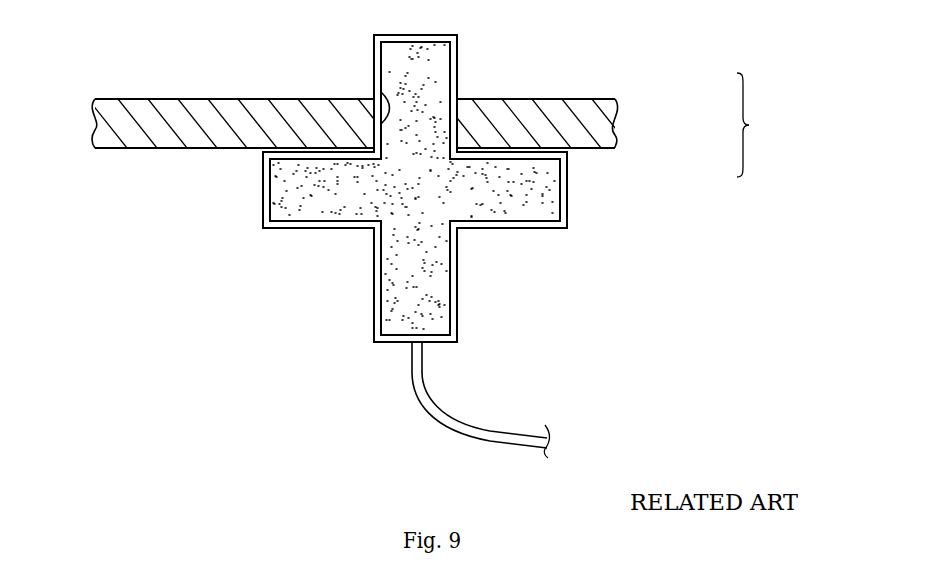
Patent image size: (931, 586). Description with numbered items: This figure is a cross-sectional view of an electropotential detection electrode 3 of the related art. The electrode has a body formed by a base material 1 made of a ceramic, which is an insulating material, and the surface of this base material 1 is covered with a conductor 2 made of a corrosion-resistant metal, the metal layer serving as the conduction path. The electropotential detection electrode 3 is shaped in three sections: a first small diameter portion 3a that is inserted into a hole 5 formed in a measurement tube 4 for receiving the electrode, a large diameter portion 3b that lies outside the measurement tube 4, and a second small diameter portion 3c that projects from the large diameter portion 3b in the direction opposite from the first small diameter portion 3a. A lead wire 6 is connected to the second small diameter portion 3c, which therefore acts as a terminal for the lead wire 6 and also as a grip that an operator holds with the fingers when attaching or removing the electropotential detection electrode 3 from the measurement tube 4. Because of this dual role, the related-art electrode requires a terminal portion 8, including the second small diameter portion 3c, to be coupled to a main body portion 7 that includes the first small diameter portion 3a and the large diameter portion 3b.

The base material 1 is at (328, 202).
The conductor 2 is at (373, 283).
The electropotential detection electrode 3 is at (548, 333).
The first small diameter portion 3a is at (457, 52).
The large diameter portion 3b is at (567, 190).
The second small diameter portion 3c is at (457, 290).
The measurement tube 4 is at (142, 99).
The hole 5 is at (374, 92).
The lead wire 6 is at (437, 418).
The main body portion 7 is at (753, 125).
The terminal portion 8 is at (470, 261).